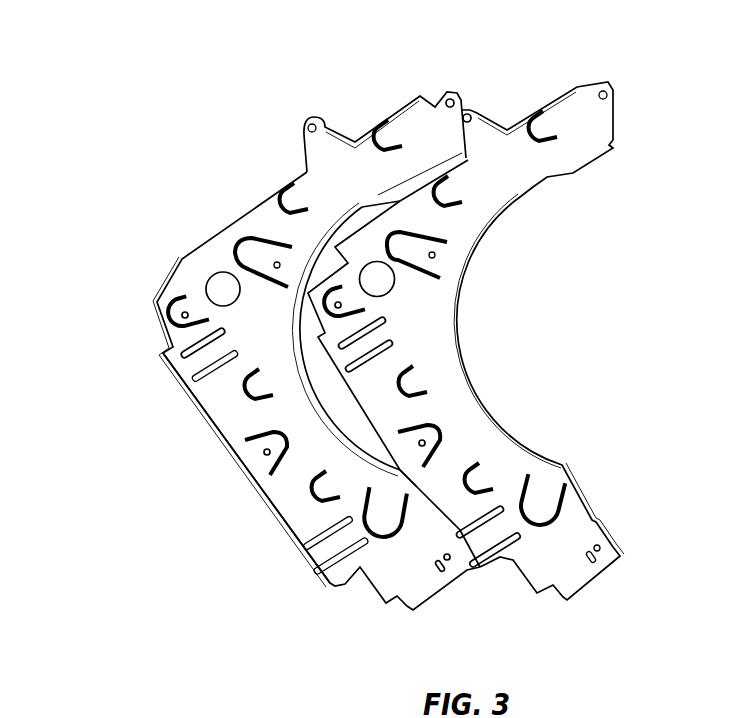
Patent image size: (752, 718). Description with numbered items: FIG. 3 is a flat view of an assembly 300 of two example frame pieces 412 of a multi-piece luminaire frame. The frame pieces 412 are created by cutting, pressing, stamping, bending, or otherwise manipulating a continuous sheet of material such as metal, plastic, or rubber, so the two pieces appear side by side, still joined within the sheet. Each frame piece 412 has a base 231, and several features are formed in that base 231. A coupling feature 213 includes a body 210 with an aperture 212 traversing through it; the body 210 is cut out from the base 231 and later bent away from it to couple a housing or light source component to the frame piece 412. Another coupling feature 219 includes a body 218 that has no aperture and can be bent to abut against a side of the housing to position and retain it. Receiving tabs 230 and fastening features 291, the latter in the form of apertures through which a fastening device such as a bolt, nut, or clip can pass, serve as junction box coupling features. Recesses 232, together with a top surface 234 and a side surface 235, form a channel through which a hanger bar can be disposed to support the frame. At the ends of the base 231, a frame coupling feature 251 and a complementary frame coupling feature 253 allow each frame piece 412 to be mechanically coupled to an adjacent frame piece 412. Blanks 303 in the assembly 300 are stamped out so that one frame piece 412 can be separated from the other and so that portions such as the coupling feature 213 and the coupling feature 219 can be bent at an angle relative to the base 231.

The assembly 300 is at (146, 113).
The body 210 is at (240, 252).
The aperture 212 is at (277, 262).
The coupling feature 213 is at (250, 247).
The body 218 is at (540, 505).
The coupling feature 219 is at (548, 484).
The receiving tab 230 is at (398, 128).
The base 231 is at (443, 327).
The recess 232 is at (200, 364).
The top surface 234 is at (277, 491).
The side surface 235 is at (327, 512).
The frame coupling feature 251 is at (599, 588).
The complementary frame coupling feature 253 is at (599, 82).
The fastening feature 291 is at (305, 117).
The blank 303 is at (357, 211).
The frame piece 412 is at (209, 419).